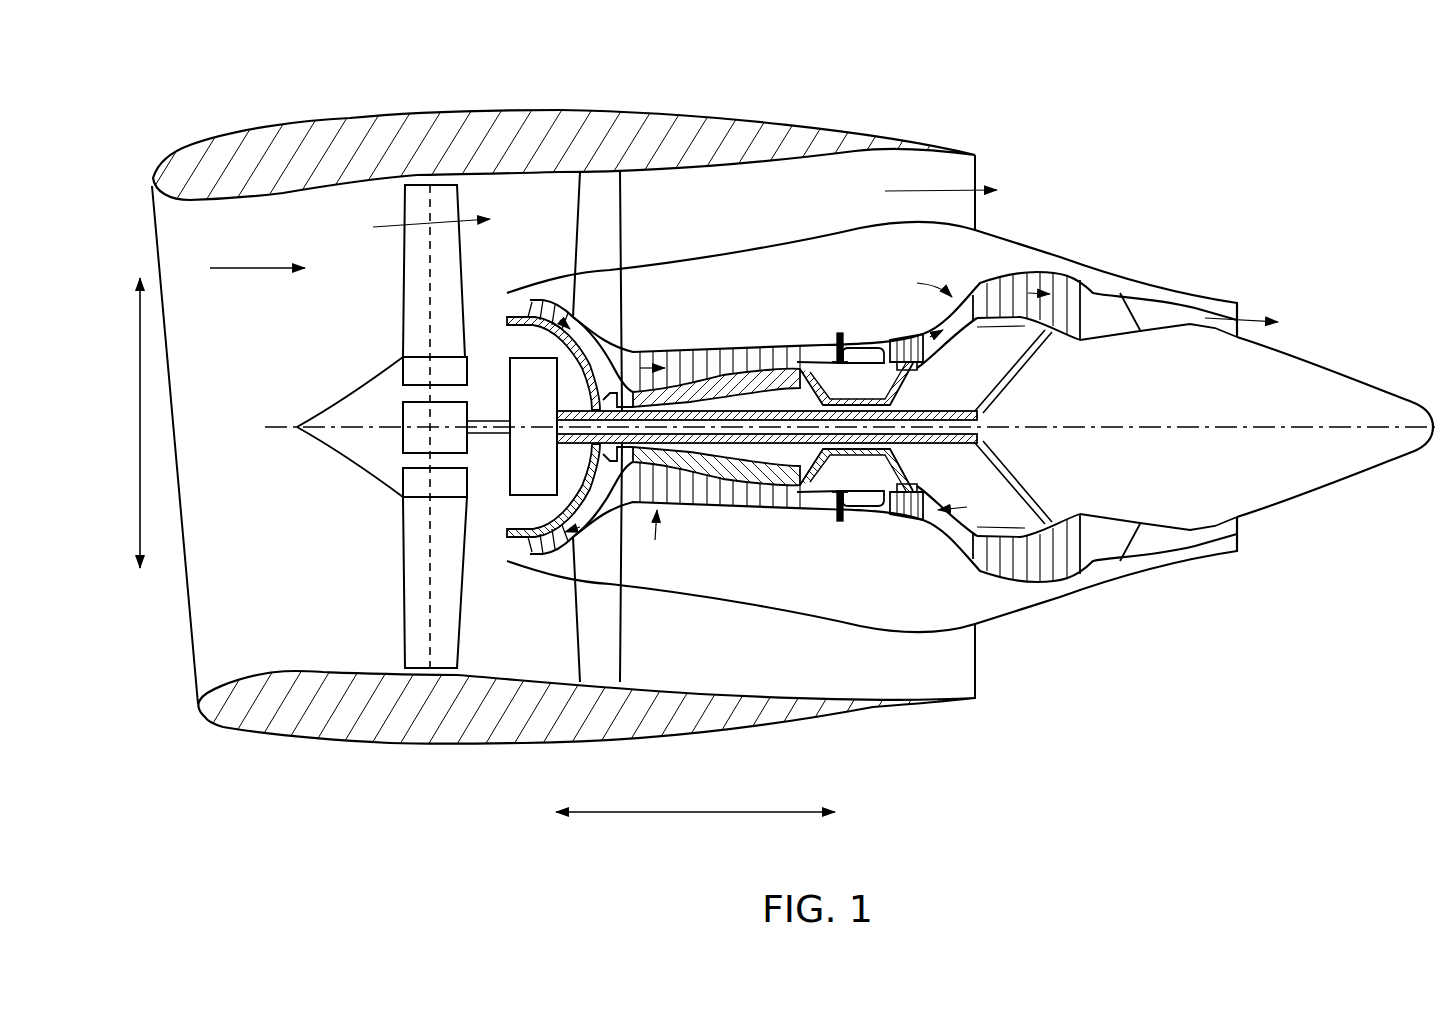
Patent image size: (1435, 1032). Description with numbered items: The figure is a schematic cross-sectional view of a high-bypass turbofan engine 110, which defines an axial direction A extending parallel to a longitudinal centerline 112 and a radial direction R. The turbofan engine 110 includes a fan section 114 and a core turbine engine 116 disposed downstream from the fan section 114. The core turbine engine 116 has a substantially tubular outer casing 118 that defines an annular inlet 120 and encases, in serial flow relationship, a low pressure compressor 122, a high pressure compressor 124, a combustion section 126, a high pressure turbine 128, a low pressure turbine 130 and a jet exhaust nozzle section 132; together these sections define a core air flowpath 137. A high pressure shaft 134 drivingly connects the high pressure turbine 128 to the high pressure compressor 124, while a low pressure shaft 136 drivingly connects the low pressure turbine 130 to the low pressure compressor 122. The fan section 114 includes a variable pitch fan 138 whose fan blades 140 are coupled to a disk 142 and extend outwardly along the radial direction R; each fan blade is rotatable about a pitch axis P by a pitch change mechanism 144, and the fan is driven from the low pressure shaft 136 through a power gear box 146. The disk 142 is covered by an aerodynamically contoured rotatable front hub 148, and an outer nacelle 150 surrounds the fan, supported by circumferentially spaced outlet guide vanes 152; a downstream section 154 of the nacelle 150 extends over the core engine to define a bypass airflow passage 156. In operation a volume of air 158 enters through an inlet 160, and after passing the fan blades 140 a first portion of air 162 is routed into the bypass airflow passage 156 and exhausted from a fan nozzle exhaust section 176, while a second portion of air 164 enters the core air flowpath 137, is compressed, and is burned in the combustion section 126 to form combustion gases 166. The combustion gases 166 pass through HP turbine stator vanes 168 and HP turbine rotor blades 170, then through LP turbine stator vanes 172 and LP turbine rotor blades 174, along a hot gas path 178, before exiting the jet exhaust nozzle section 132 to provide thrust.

The turbofan engine 110 is at (798, 355).
The longitudinal centerline 112 is at (1154, 426).
The fan section 114 is at (336, 382).
The core turbine engine 116 is at (852, 268).
The outer casing 118 is at (806, 618).
The annular inlet 120 is at (503, 550).
The low pressure compressor 122 is at (577, 533).
The high pressure compressor 124 is at (701, 458).
The combustion section 126 is at (856, 510).
The high pressure turbine 128 is at (980, 503).
The low pressure turbine 130 is at (1073, 585).
The jet exhaust nozzle section 132 is at (1137, 566).
The high pressure shaft 134 is at (900, 386).
The low pressure shaft 136 is at (990, 408).
The core air flowpath 137 is at (603, 528).
The variable pitch fan 138 is at (350, 485).
The fan blades 140 is at (402, 592).
The disk 142 is at (402, 373).
The pitch change mechanism 144 is at (402, 410).
The power gear box 146 is at (542, 380).
The front hub 148 is at (304, 447).
The outer nacelle 150 is at (453, 745).
The outlet guide vanes 152 is at (622, 215).
The downstream section of nacelle 154 is at (855, 130).
The bypass airflow passage 156 is at (812, 212).
The volume of air 158 is at (252, 266).
The inlet 160 is at (197, 683).
The first portion of air 162 is at (407, 217).
The second portion of air 164 is at (492, 305).
The combustion gases 166 is at (1007, 297).
The HP turbine stator vanes 168 is at (875, 515).
The HP turbine rotor blades 170 is at (924, 492).
The LP turbine stator vanes 172 is at (977, 563).
The LP turbine rotor blades 174 is at (987, 577).
The fan nozzle exhaust section 176 is at (977, 170).
The hot gas path 178 is at (912, 282).
The pitch axis P is at (436, 205).
The axial direction A is at (712, 810).
The radial direction R is at (135, 380).